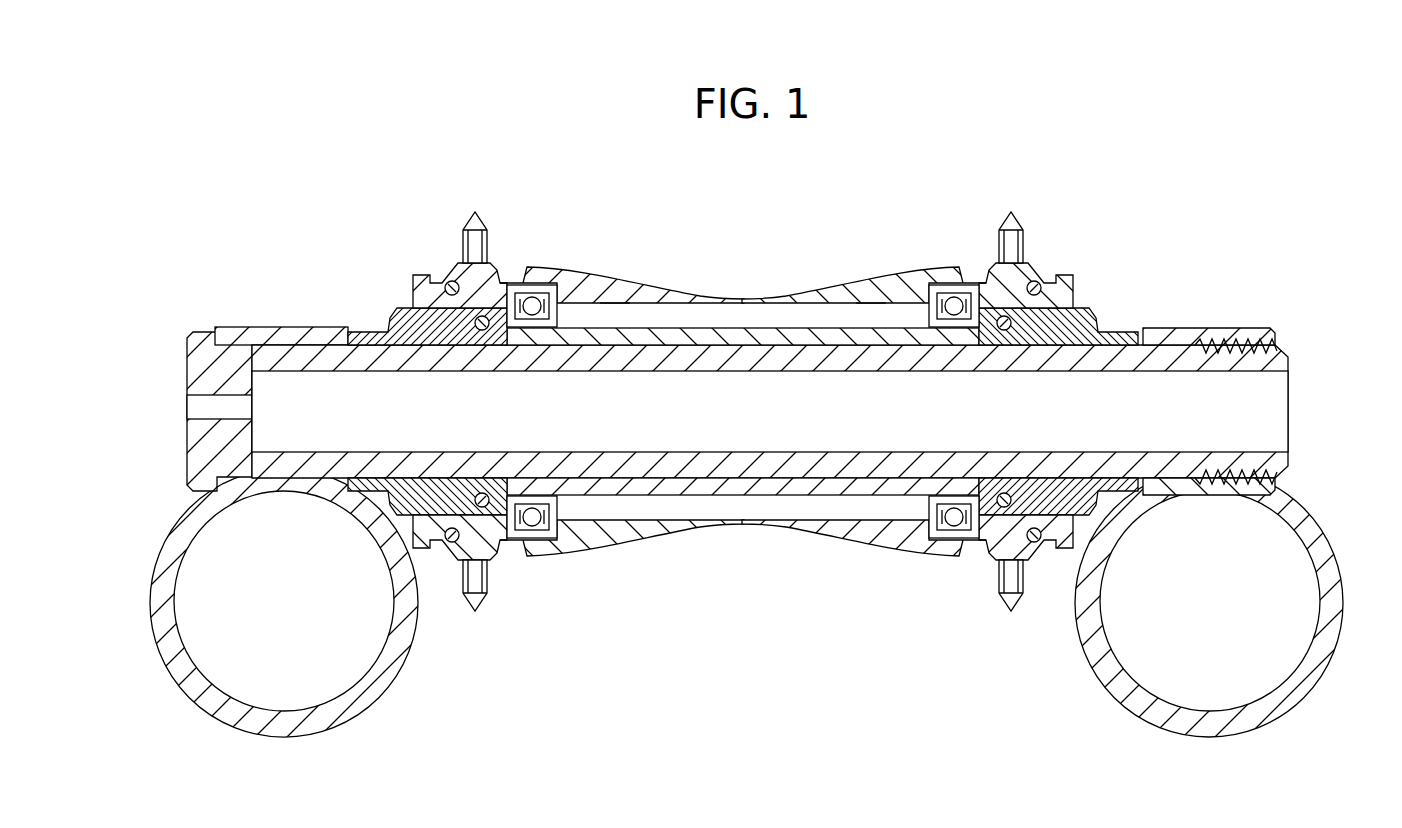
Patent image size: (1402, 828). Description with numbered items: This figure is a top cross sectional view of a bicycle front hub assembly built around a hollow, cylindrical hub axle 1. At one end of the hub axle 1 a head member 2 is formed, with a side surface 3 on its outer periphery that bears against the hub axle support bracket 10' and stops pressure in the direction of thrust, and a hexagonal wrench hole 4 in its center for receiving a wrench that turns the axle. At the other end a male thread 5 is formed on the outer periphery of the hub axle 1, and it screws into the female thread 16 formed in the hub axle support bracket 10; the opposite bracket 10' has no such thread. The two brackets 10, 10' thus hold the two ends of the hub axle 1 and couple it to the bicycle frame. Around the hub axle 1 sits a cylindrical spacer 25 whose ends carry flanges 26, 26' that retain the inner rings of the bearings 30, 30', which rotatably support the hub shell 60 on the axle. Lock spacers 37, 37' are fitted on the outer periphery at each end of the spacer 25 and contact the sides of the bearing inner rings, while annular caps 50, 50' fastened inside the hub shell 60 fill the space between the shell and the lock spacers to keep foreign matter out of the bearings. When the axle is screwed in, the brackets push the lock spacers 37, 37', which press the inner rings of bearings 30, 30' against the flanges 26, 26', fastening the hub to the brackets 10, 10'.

The hub axle 1 is at (777, 357).
The head member 2 is at (193, 457).
The side surface 3 is at (220, 337).
The wrench hole 4 is at (190, 396).
The male thread 5 is at (1240, 332).
The hub axle support bracket 10 is at (1238, 603).
The hub axle support bracket 10' is at (244, 603).
The female thread 16 is at (1258, 467).
The spacer 25 is at (732, 337).
The flange 26 is at (623, 273).
The flange 26' is at (866, 274).
The bearing 30 is at (540, 266).
The bearing 30' is at (945, 260).
The lock spacer 37 is at (420, 305).
The lock spacer 37' is at (1072, 305).
The annular cap 50 is at (437, 253).
The annular cap 50' is at (1060, 260).
The hub shell 60 is at (672, 297).